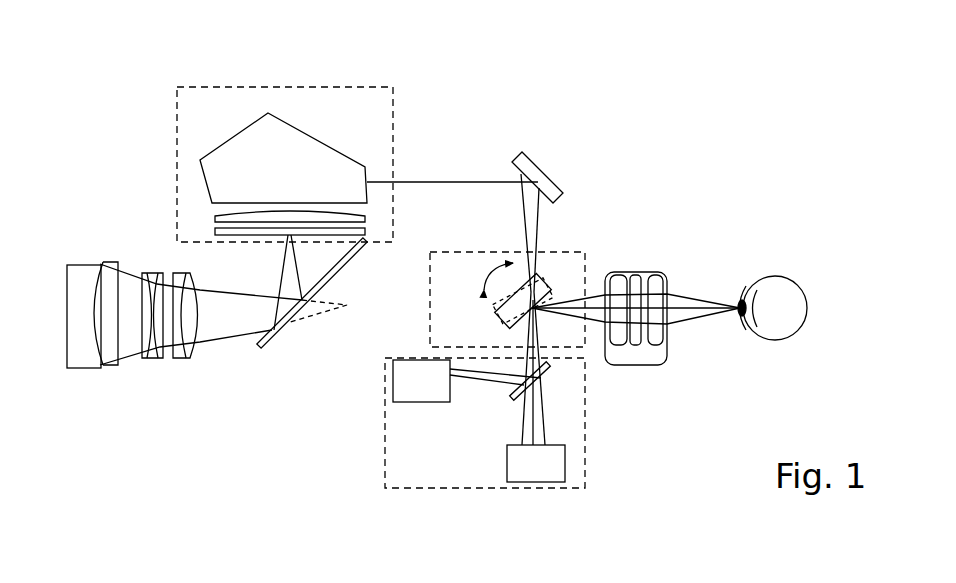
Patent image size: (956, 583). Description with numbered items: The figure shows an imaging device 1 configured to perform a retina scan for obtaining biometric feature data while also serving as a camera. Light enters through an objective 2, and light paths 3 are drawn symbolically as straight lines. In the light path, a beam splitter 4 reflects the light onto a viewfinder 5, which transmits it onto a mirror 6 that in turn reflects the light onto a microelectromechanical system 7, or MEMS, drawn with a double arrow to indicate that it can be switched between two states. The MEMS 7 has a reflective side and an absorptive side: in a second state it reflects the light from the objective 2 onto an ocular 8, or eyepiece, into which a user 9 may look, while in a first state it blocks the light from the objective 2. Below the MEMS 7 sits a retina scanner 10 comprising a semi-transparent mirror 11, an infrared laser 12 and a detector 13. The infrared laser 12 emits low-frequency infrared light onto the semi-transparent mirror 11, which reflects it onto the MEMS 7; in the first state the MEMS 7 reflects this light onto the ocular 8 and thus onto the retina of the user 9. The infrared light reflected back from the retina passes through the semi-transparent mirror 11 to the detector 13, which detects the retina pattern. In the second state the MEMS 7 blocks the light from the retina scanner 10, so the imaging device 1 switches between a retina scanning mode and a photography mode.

The imaging device 1 is at (450, 60).
The objective 2 is at (116, 208).
The light paths 3 is at (86, 370).
The beam splitter 4 is at (332, 282).
The viewfinder 5 is at (297, 87).
The mirror 6 is at (545, 170).
The microelectromechanical system 7 is at (573, 252).
The ocular 8 is at (648, 272).
The user 9 is at (774, 275).
The retina scanner 10 is at (585, 427).
The semi-transparent mirror 11 is at (545, 372).
The infrared laser 12 is at (467, 381).
The detector 13 is at (536, 463).